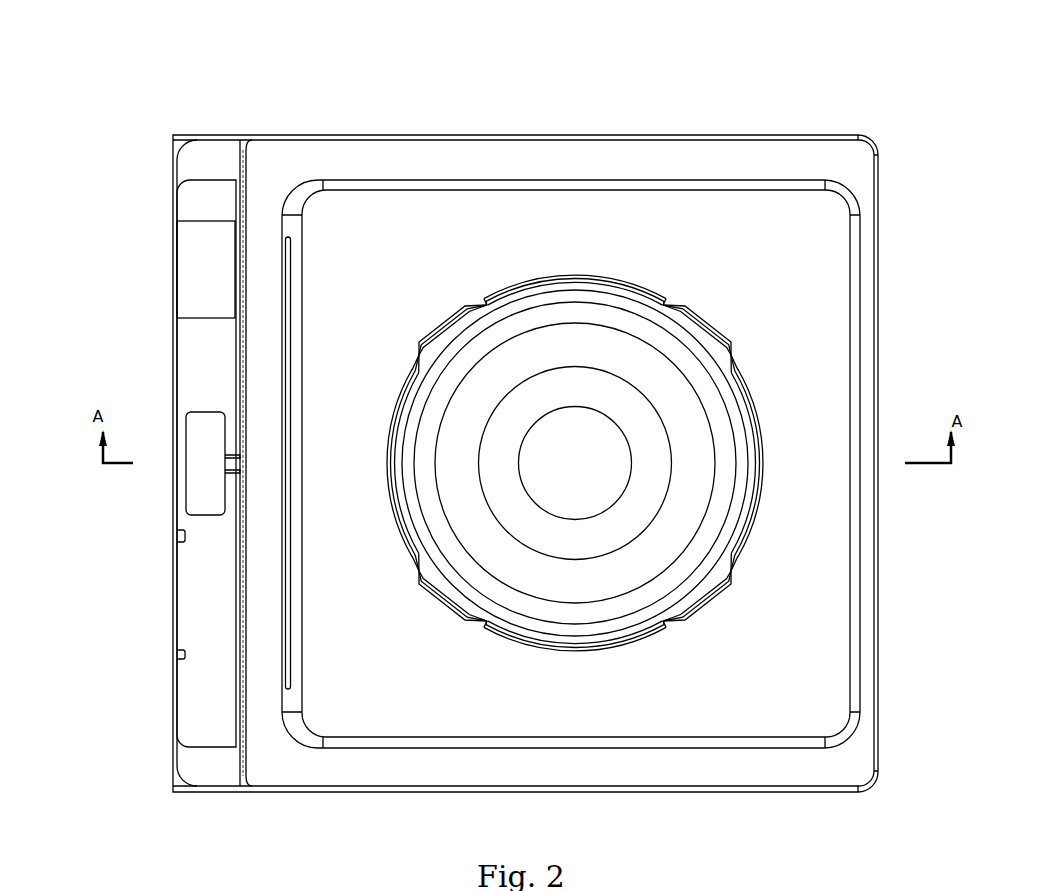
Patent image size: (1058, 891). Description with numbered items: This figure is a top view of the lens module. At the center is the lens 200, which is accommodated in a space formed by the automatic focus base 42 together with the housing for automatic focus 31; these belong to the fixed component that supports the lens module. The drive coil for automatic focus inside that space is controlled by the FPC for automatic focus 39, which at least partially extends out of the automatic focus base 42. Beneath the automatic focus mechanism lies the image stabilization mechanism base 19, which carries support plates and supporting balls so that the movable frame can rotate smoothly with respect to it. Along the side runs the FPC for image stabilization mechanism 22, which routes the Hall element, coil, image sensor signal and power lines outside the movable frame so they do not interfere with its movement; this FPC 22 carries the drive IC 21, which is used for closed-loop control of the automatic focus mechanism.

The image stabilization mechanism base 19 is at (207, 762).
The drive IC 21 is at (193, 262).
The FPC for image stabilization mechanism 22 is at (198, 622).
The housing for automatic focus 31 is at (495, 228).
The FPC for automatic focus 39 is at (210, 483).
The automatic focus base 42 is at (360, 153).
The lens 200 is at (582, 438).